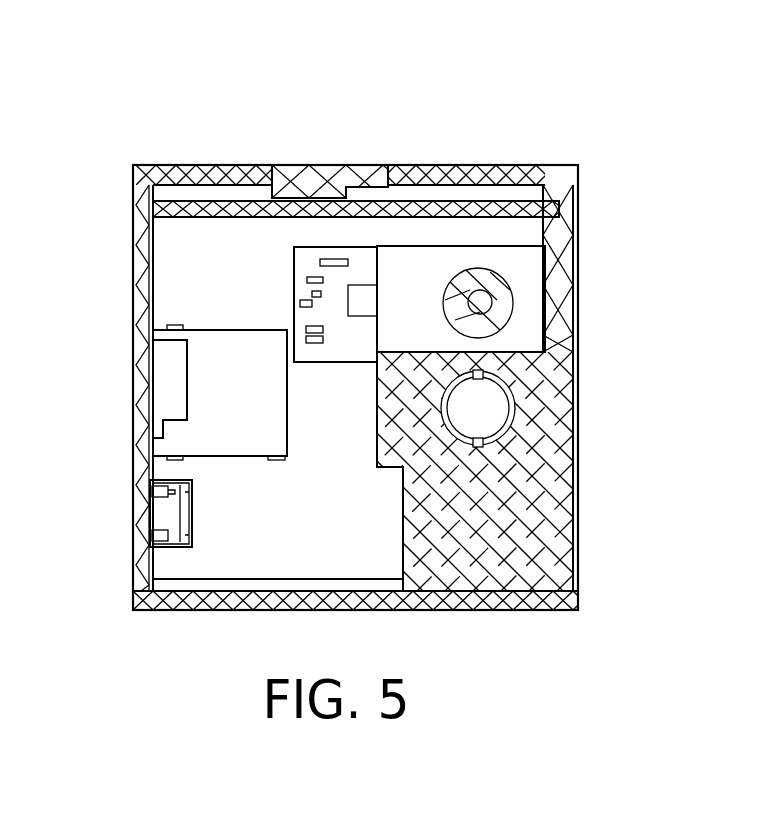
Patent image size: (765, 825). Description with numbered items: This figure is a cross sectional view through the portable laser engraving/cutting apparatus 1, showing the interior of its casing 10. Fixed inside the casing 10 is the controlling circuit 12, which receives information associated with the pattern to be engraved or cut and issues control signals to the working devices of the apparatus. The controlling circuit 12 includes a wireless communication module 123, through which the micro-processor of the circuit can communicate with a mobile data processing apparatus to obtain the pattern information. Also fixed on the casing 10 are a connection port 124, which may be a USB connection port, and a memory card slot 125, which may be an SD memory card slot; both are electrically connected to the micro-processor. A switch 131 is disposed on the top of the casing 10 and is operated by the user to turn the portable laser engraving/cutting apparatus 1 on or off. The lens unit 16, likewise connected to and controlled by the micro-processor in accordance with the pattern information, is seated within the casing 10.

The portable laser engraving/cutting apparatus 1 is at (358, 70).
The casing 10 is at (422, 597).
The controlling circuit 12 is at (197, 205).
The switch 131 is at (316, 182).
The wireless communication module 123 is at (293, 290).
The connection port 124 is at (170, 512).
The memory card slot 125 is at (185, 383).
The lens unit 16 is at (478, 408).